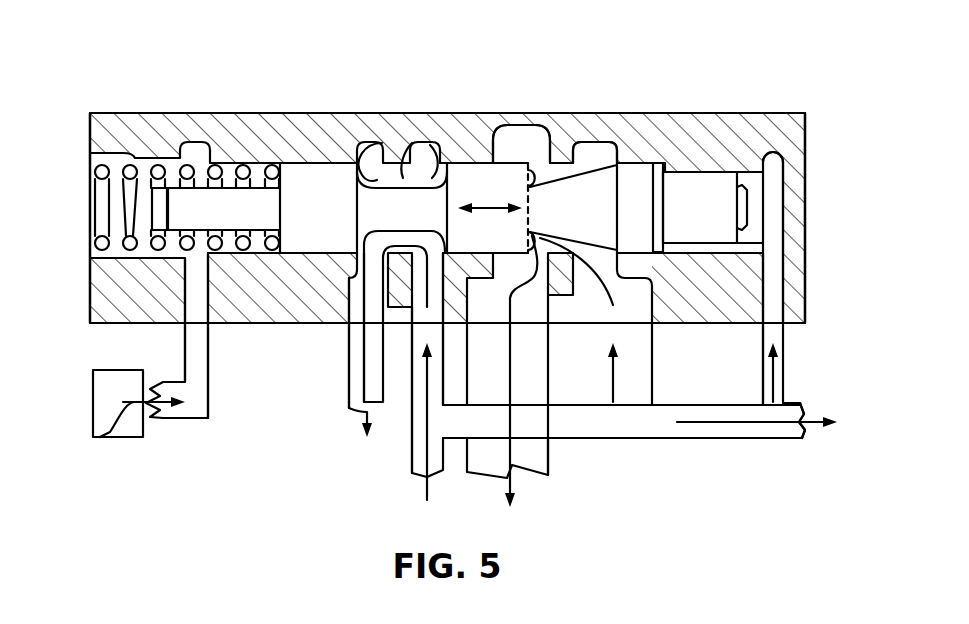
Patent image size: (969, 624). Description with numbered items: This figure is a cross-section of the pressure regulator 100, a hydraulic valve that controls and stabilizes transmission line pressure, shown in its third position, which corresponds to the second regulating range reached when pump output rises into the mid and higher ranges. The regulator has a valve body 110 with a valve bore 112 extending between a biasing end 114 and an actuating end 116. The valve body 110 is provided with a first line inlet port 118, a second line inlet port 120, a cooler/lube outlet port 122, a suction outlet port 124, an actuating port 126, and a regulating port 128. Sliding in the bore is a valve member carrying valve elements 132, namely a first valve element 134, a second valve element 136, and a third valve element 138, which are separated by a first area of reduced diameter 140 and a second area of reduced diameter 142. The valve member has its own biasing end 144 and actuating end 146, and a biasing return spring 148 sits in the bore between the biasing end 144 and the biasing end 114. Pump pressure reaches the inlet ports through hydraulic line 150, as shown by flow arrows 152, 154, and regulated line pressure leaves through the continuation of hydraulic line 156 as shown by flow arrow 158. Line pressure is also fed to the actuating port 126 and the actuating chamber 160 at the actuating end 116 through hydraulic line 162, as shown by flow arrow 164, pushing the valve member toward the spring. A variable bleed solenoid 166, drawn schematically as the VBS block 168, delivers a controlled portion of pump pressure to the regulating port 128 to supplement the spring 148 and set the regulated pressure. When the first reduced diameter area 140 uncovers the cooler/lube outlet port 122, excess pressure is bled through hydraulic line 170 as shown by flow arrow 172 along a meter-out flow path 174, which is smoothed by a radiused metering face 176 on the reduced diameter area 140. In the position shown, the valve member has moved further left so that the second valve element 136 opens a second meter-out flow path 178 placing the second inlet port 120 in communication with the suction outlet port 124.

The pressure regulator 100 is at (338, 73).
The valve body 110 is at (263, 322).
The valve bore 112 is at (90, 165).
The biasing end of the valve bore 114 is at (90, 135).
The actuating end of the valve bore 116 is at (807, 135).
The first line inlet port 118 is at (383, 312).
The second line inlet port 120 is at (650, 302).
The cooler/lube outlet port 122 is at (340, 307).
The suction outlet port 124 is at (548, 295).
The actuating port 126 is at (808, 282).
The regulating port 128 is at (208, 307).
The valve elements 132 is at (485, 92).
The first valve element 134 is at (318, 163).
The second valve element 136 is at (527, 143).
The third valve element 138 is at (673, 170).
The first area of reduced diameter 140 is at (432, 170).
The second area of reduced diameter 142 is at (590, 175).
The biasing end of the valve member 144 is at (256, 168).
The actuating end of the valve member 146 is at (748, 207).
The biasing return spring 148 is at (90, 245).
The hydraulic line 150 is at (412, 448).
The flow arrow 152 is at (427, 482).
The flow arrow 154 is at (615, 382).
The hydraulic line 156 is at (757, 438).
The flow arrow 158 is at (700, 440).
The actuating chamber 160 is at (778, 158).
The hydraulic line 162 is at (785, 358).
The flow arrow 164 is at (777, 380).
The variable bleed solenoid (VBS) 166 is at (145, 428).
The variable bleed solenoid 168 is at (100, 437).
The hydraulic line 170 is at (348, 393).
The flow arrow 172 is at (352, 415).
The flow path 174 is at (438, 140).
The radiused metering face 176 is at (372, 165).
The second flow path 178 is at (558, 176).